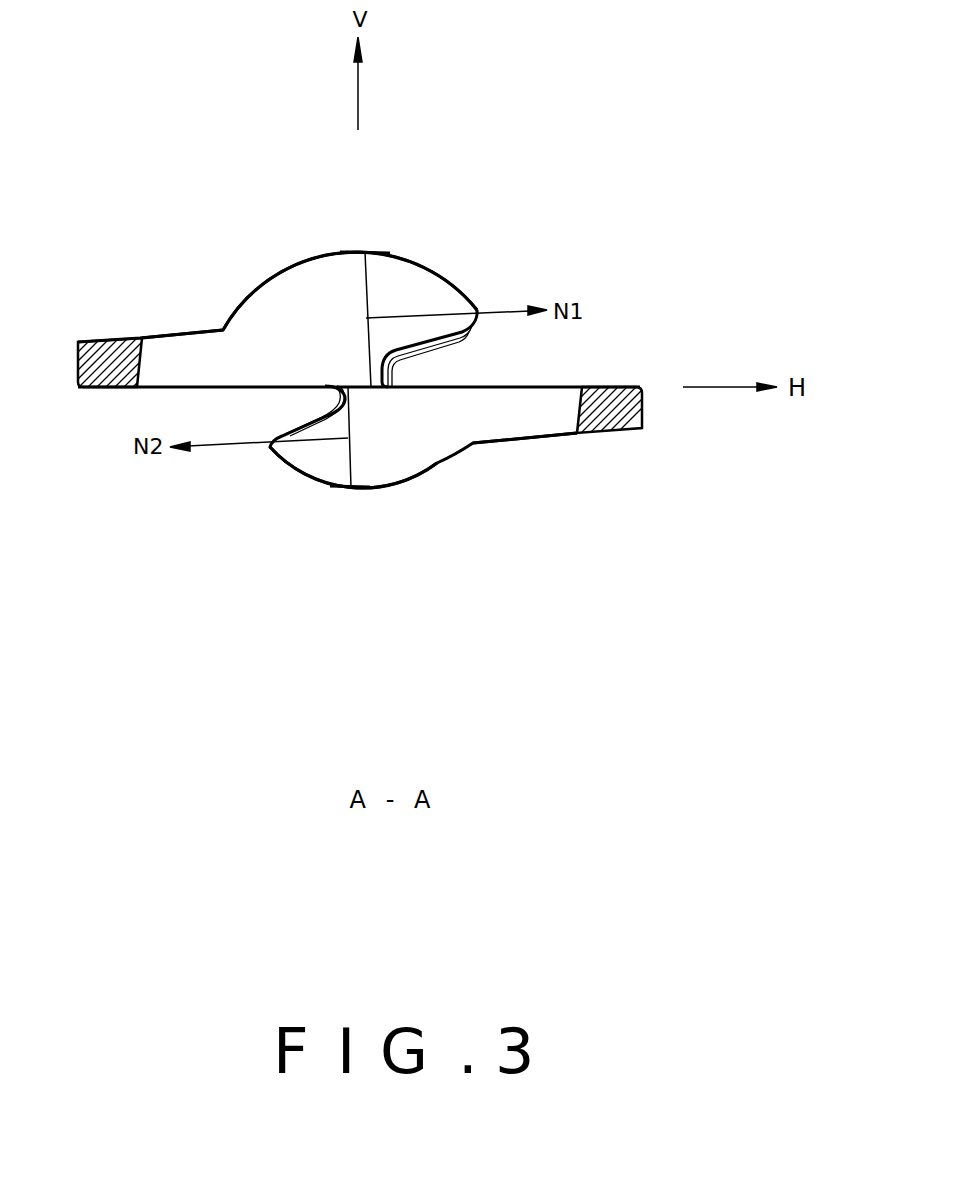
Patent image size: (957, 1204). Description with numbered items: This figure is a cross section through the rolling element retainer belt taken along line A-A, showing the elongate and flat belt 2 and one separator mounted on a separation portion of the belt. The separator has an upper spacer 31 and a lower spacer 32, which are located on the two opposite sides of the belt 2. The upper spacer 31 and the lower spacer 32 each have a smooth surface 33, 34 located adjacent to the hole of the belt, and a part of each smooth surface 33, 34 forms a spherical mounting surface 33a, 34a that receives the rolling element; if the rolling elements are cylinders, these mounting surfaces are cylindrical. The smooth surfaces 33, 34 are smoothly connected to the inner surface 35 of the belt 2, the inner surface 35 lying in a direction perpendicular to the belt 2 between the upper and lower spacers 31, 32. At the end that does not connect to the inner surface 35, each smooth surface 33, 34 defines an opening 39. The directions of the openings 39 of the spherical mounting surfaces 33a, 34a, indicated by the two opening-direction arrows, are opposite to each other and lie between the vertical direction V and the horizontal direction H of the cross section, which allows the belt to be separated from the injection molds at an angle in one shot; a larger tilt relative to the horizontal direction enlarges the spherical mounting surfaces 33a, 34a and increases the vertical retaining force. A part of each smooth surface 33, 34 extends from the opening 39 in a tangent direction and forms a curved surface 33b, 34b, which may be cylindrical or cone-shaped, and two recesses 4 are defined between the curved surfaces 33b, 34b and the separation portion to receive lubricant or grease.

The belt 2 is at (607, 395).
The recess 4 is at (420, 368).
The upper spacer 31 is at (383, 250).
The lower spacer 32 is at (388, 488).
The smooth surface 33 is at (359, 253).
The spherical mounting surface 33a is at (287, 313).
The curved surface 33b is at (365, 292).
The smooth surface 34 is at (334, 523).
The spherical mounting surface 34a is at (362, 465).
The curved surface 34b is at (317, 458).
The inner surface 35 is at (157, 357).
The opening 39 is at (367, 272).